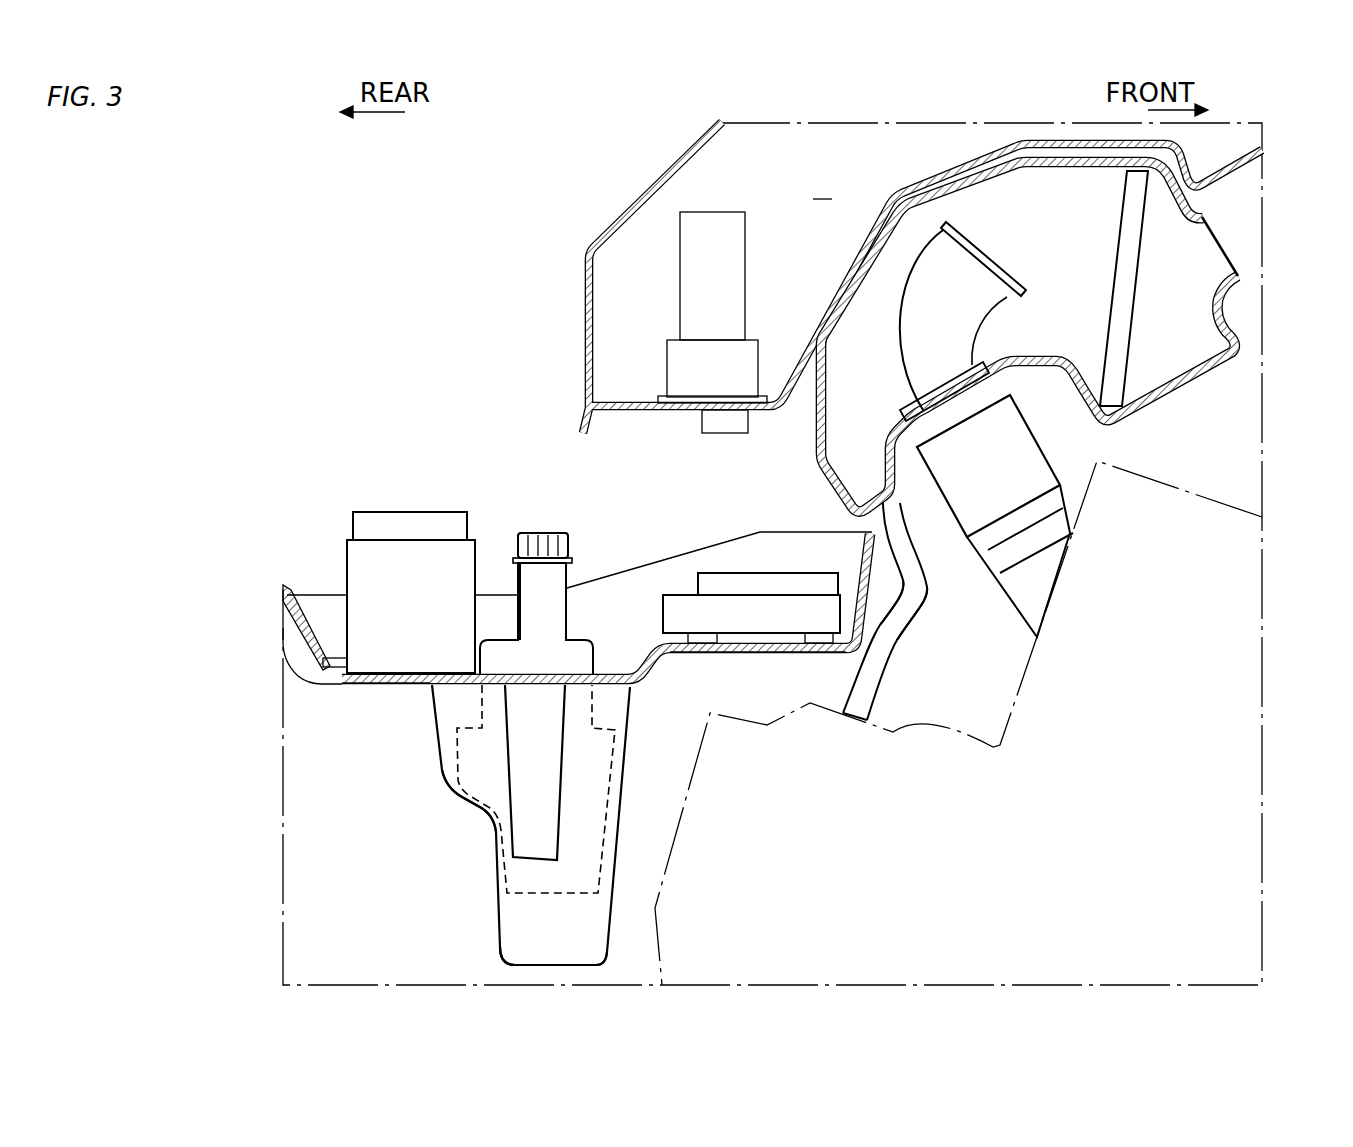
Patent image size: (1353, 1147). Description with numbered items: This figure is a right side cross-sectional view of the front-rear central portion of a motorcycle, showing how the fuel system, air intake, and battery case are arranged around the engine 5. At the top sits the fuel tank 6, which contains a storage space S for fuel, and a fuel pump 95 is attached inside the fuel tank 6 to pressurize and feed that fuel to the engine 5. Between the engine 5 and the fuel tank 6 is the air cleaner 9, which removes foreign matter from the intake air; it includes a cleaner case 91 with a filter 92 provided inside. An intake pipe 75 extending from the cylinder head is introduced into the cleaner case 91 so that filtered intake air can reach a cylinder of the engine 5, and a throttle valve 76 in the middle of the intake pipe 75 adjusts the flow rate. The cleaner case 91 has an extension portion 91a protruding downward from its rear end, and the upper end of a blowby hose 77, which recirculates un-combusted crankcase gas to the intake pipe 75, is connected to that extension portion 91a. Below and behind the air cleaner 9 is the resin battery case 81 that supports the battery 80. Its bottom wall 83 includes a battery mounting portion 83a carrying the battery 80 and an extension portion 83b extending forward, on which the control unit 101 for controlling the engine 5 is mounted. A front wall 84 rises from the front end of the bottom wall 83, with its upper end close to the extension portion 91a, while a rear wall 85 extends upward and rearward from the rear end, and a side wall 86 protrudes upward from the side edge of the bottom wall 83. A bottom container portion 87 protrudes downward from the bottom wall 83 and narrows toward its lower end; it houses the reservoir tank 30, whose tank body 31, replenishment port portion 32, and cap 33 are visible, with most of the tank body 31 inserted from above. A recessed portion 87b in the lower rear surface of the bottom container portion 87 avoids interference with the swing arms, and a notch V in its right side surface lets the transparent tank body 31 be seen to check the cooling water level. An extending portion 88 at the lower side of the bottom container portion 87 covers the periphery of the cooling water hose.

The engine 5 is at (1226, 618).
The fuel tank 6 is at (627, 210).
The air cleaner 9 is at (1216, 372).
The reservoir tank 30 is at (588, 628).
The tank body 31 is at (443, 765).
The replenishment port portion 32 is at (523, 580).
The cap 33 is at (543, 533).
The intake pipe 75 is at (967, 337).
The throttle valve 76 is at (1013, 443).
The blowby hose 77 is at (883, 657).
The battery 80 is at (367, 568).
The battery case 81 is at (332, 705).
The bottom wall 83 is at (617, 686).
The battery mounting portion 83a is at (387, 684).
The extension portion 83b is at (743, 653).
The front wall 84 is at (867, 583).
The rear wall 85 is at (297, 620).
The side wall 86 is at (677, 570).
The bottom container portion 87 is at (627, 780).
The recessed portion 87b is at (483, 813).
The extending portion 88 is at (540, 949).
The cleaner case 91 is at (1147, 403).
The extension portion 91a is at (897, 468).
The filter 92 is at (1125, 310).
The fuel pump 95 is at (738, 273).
The control unit 101 is at (757, 612).
The storage space S is at (822, 185).
The notch V is at (523, 827).